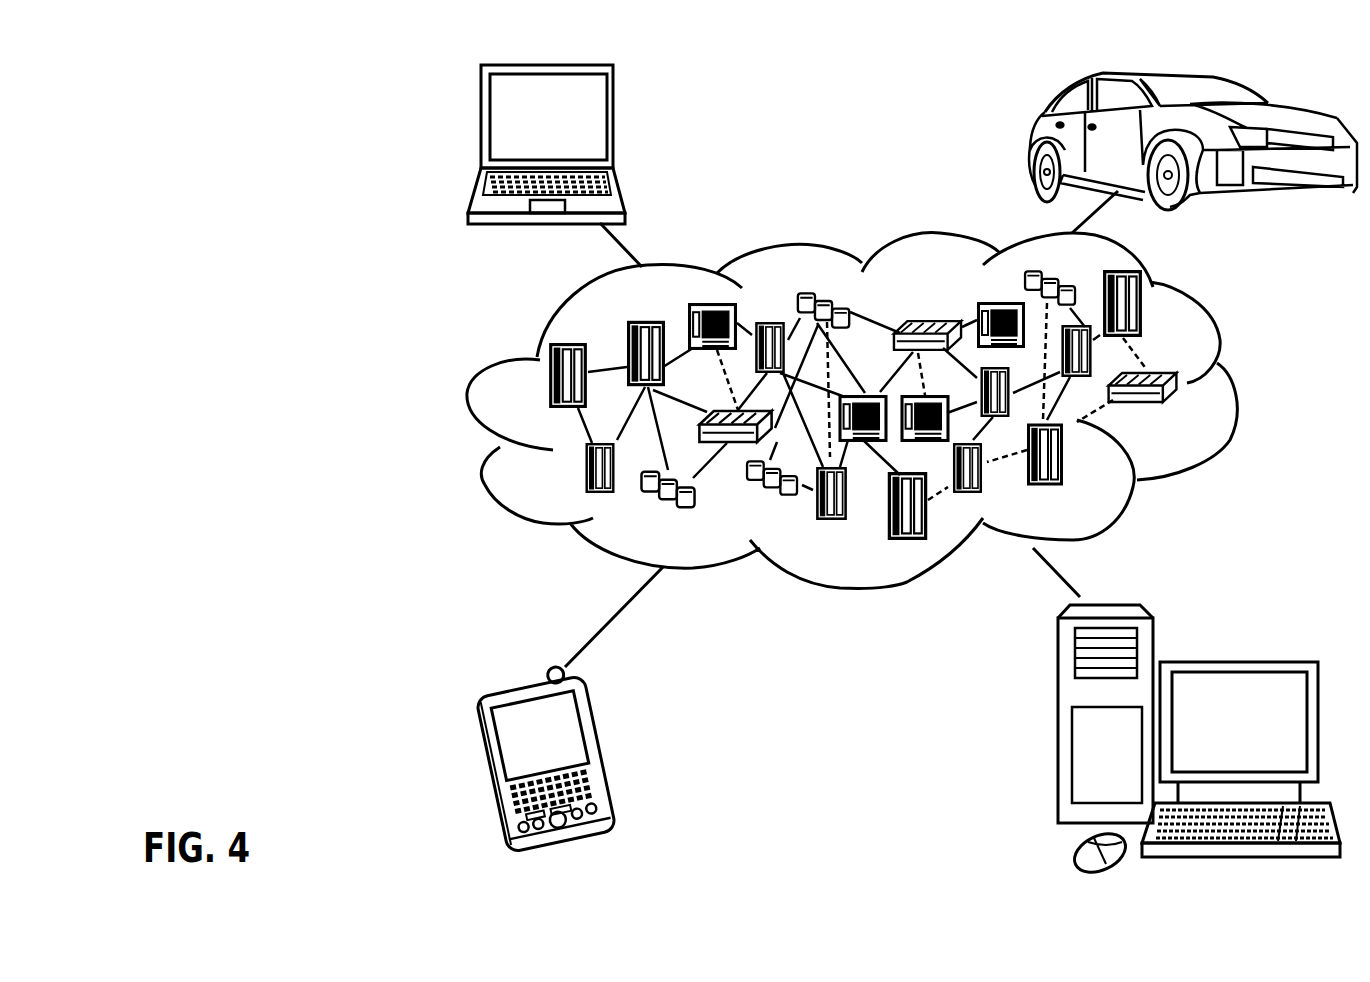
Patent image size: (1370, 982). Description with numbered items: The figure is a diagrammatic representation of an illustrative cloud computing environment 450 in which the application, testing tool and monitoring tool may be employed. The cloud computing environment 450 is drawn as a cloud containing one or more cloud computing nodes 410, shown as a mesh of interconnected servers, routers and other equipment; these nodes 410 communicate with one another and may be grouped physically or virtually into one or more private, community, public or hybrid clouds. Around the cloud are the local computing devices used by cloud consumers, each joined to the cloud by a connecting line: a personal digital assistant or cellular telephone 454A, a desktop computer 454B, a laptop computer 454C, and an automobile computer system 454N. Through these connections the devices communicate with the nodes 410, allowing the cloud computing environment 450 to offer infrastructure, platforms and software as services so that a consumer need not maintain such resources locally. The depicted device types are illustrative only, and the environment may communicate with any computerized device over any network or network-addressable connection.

The cloud computing environment 450 is at (1238, 386).
The cloud computing nodes 410 is at (1178, 410).
The personal digital assistant (PDA) or cellular telephone 454A is at (603, 748).
The desktop computer 454B is at (1240, 662).
The laptop computer 454C is at (614, 122).
The automobile computer system 454N is at (1030, 141).